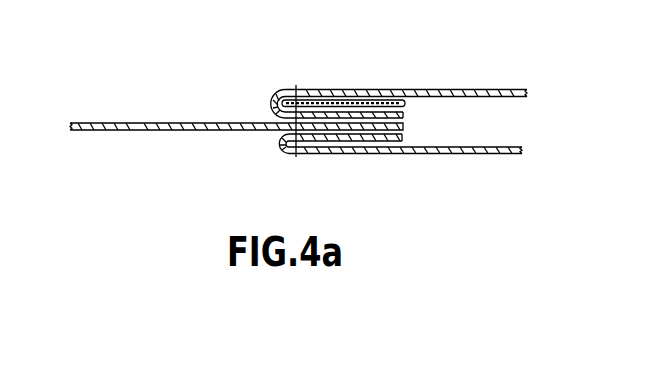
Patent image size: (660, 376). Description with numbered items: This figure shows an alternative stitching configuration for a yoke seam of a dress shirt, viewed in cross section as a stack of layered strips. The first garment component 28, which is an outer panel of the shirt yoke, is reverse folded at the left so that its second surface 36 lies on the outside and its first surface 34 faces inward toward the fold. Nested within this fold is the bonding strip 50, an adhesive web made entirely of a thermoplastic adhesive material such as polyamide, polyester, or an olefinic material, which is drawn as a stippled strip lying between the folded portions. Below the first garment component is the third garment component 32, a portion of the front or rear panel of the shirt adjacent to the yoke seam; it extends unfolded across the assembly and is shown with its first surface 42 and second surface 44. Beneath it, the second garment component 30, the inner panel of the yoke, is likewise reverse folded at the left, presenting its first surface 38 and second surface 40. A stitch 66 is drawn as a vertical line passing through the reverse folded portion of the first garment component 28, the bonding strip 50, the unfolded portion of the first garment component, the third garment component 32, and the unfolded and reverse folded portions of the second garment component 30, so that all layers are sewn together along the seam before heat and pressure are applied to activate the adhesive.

The first garment component 28 is at (524, 87).
The second garment component 30 is at (484, 154).
The third garment component 32 is at (95, 123).
The first surface 34 is at (500, 97).
The second surface 36 is at (492, 89).
The first surface 38 is at (373, 158).
The second surface 40 is at (532, 130).
The first surface 42 is at (207, 123).
The second surface 44 is at (180, 130).
The bonding strip 50 is at (408, 89).
The stitch 66 is at (295, 86).